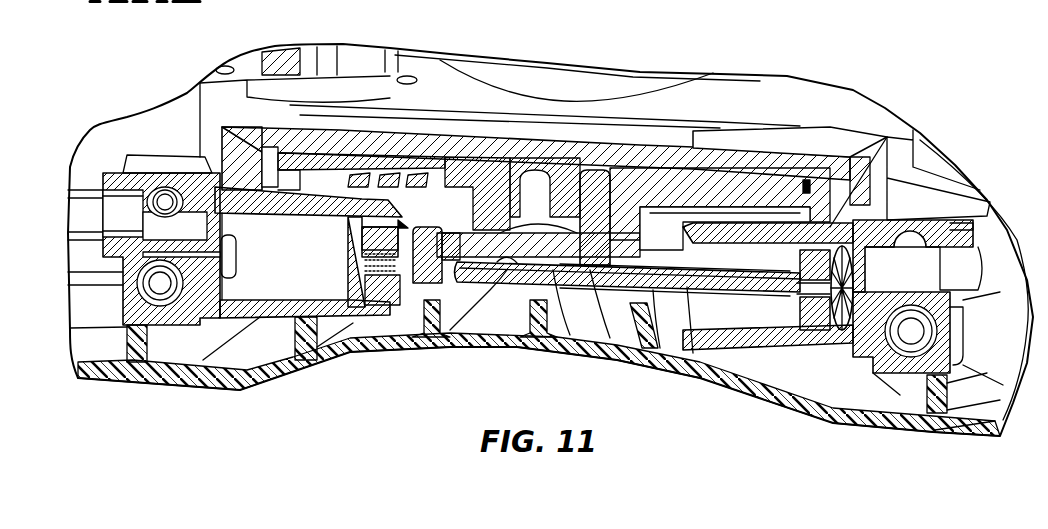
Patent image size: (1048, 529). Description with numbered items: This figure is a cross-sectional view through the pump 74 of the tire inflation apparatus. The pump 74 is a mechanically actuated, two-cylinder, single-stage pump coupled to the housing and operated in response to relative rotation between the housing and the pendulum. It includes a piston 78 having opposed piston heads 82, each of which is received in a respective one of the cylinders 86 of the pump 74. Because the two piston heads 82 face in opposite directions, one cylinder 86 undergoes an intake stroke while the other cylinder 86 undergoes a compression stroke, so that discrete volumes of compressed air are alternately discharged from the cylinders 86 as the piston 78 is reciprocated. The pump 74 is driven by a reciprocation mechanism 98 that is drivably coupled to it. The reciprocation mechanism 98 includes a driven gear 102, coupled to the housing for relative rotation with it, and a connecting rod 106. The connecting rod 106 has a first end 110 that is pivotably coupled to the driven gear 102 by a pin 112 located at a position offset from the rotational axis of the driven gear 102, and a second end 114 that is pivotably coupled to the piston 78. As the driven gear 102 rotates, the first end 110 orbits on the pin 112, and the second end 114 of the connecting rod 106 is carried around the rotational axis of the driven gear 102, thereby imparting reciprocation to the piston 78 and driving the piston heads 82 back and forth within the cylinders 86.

The pump 74 is at (467, 293).
The piston 78 is at (590, 268).
The piston heads 82 is at (408, 255).
The cylinders 86 is at (258, 296).
The reciprocation mechanism 98 is at (664, 223).
The driven gear 102 is at (250, 120).
The connecting rod 106 is at (525, 262).
The first end 110 is at (625, 268).
The pin 112 is at (592, 178).
The second end 114 is at (355, 233).